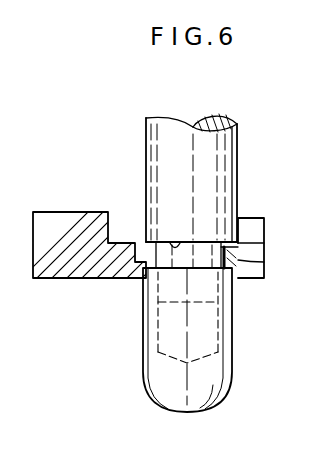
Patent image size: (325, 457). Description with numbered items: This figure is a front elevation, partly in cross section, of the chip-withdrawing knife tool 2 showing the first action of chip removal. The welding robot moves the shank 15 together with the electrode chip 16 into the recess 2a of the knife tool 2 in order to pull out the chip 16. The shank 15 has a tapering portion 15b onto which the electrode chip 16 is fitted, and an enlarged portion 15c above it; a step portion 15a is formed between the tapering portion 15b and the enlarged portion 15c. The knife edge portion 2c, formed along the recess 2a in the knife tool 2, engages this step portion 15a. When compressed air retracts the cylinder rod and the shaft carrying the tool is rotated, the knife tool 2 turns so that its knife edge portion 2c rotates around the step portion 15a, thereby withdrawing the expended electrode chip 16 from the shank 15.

The knife tool 2 is at (52, 270).
The recess 2a is at (250, 224).
The knife edge portion 2c is at (248, 251).
The shank 15 is at (238, 122).
The step portion 15a is at (173, 243).
The tapering portion 15b is at (240, 266).
The enlarged portion 15c is at (240, 172).
The electrode chip 16 is at (233, 367).